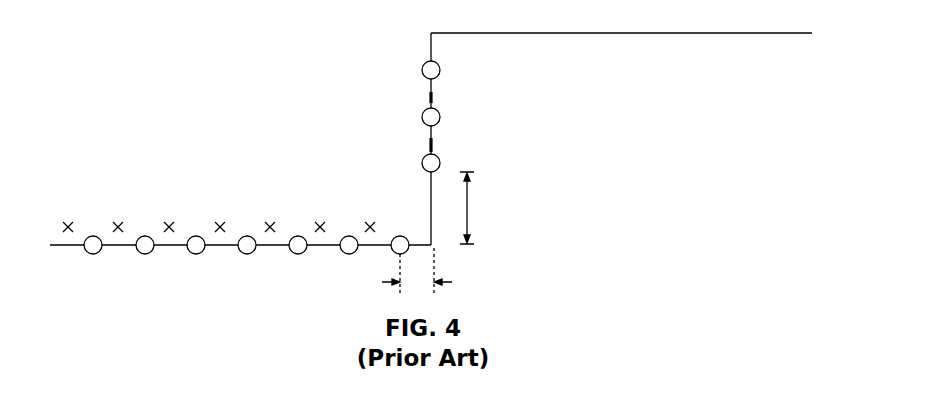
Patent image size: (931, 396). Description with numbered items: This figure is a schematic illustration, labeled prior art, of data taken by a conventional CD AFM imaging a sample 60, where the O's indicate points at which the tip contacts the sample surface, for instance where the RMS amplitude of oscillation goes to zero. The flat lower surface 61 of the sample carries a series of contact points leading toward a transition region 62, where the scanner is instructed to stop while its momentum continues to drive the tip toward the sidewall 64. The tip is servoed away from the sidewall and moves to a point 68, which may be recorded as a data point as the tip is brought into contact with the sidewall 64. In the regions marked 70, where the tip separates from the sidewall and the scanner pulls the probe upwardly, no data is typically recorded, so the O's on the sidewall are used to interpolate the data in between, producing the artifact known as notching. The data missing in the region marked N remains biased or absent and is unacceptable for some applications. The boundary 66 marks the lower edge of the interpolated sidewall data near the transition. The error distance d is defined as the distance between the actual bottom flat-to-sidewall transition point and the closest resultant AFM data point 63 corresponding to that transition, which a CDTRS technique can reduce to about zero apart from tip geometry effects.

The sample 60 is at (622, 33).
The lower surface 61 is at (168, 250).
The transition region 62 is at (437, 249).
The closest resultant AFM data point 63 is at (400, 236).
The sidewall 64 is at (431, 42).
The boundary of lower region 66 is at (432, 187).
The point 68 is at (438, 158).
The regions 70 is at (440, 82).
The region of missing data N is at (467, 215).
The error distance d is at (403, 271).